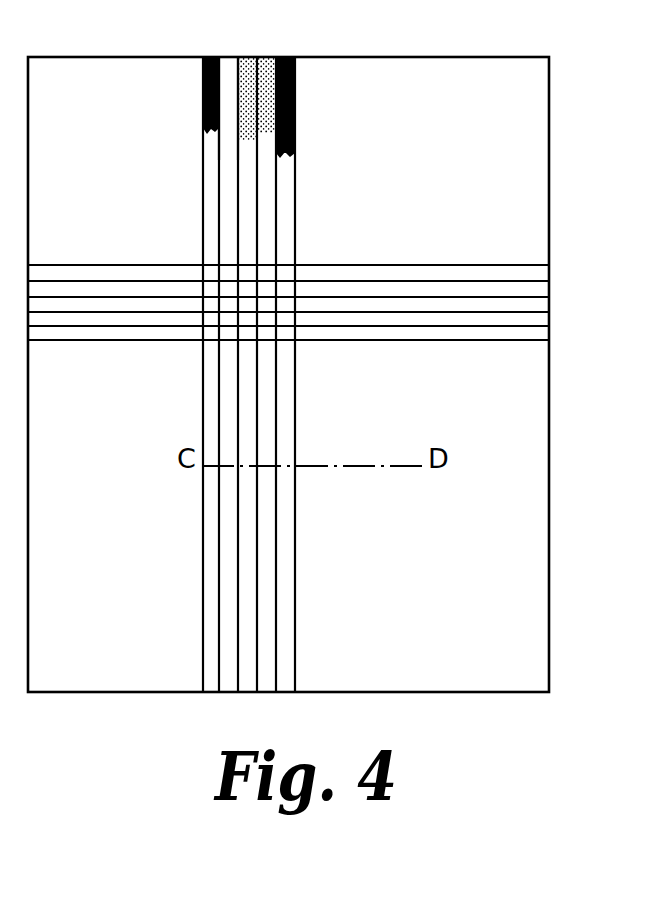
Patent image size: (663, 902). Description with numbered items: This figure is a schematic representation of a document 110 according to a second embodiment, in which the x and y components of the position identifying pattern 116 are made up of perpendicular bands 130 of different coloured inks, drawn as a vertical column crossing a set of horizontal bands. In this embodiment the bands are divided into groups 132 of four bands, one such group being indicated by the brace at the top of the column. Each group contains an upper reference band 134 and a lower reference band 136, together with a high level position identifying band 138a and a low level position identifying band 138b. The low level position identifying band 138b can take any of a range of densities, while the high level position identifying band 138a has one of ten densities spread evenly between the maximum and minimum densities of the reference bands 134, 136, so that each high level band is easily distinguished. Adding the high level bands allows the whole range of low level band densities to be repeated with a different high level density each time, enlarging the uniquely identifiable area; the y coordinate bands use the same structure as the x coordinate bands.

The document 110 is at (549, 442).
The position identifying pattern 116 is at (166, 373).
The bands 130 is at (288, 550).
The groups 132 is at (246, 105).
The upper reference band 134 is at (207, 76).
The lower reference band 136 is at (233, 148).
The high level position identifying band 138a is at (245, 143).
The low level position identifying band 138b is at (276, 57).